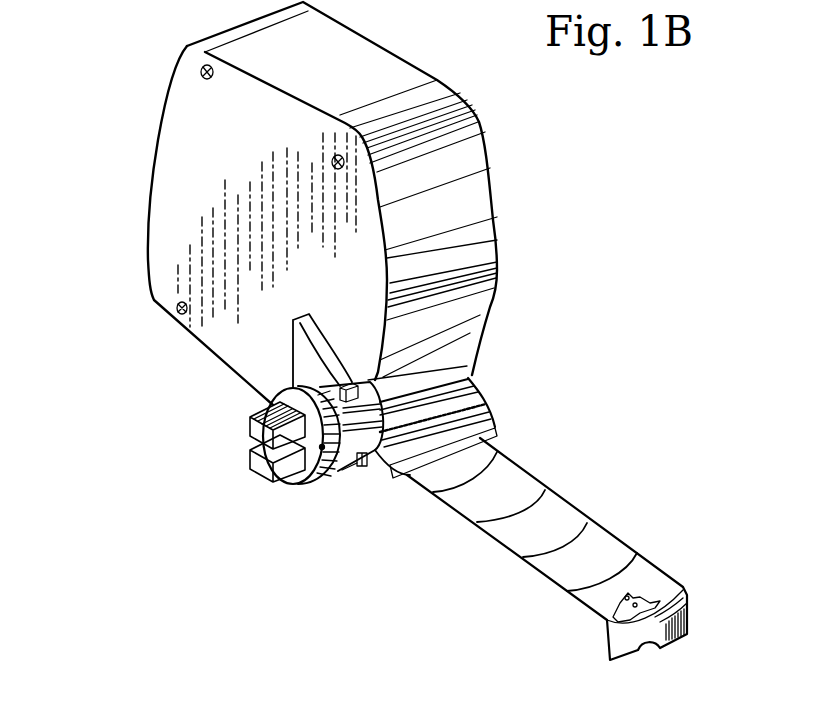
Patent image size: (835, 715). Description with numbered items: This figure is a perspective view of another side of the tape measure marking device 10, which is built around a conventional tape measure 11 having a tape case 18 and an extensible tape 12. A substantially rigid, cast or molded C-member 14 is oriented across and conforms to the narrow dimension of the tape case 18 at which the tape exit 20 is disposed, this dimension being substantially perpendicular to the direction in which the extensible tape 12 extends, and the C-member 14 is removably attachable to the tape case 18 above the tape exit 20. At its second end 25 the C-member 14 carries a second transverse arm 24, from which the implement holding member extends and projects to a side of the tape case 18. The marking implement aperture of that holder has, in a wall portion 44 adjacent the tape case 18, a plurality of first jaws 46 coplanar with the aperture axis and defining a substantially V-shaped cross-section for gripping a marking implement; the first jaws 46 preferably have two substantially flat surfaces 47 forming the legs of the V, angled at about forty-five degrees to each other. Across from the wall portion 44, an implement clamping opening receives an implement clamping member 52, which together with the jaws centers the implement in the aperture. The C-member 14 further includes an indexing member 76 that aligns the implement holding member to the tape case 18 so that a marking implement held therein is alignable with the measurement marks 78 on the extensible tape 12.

The tape measure marking device 10 is at (70, 499).
The tape measure 11 is at (529, 145).
The extensible tape 12 is at (32, 0).
The C-member 14 is at (503, 399).
The tape case 18 is at (170, 175).
The tape exit 20 is at (375, 484).
The second transverse arm 24 is at (358, 460).
The second end 25 is at (304, 511).
The wall portion 44 is at (362, 381).
The first jaws 46 is at (306, 388).
The flat surfaces 47 is at (327, 396).
The implement clamping member 52 is at (288, 502).
The indexing member 76 is at (518, 418).
The measurement marks 78 is at (573, 537).